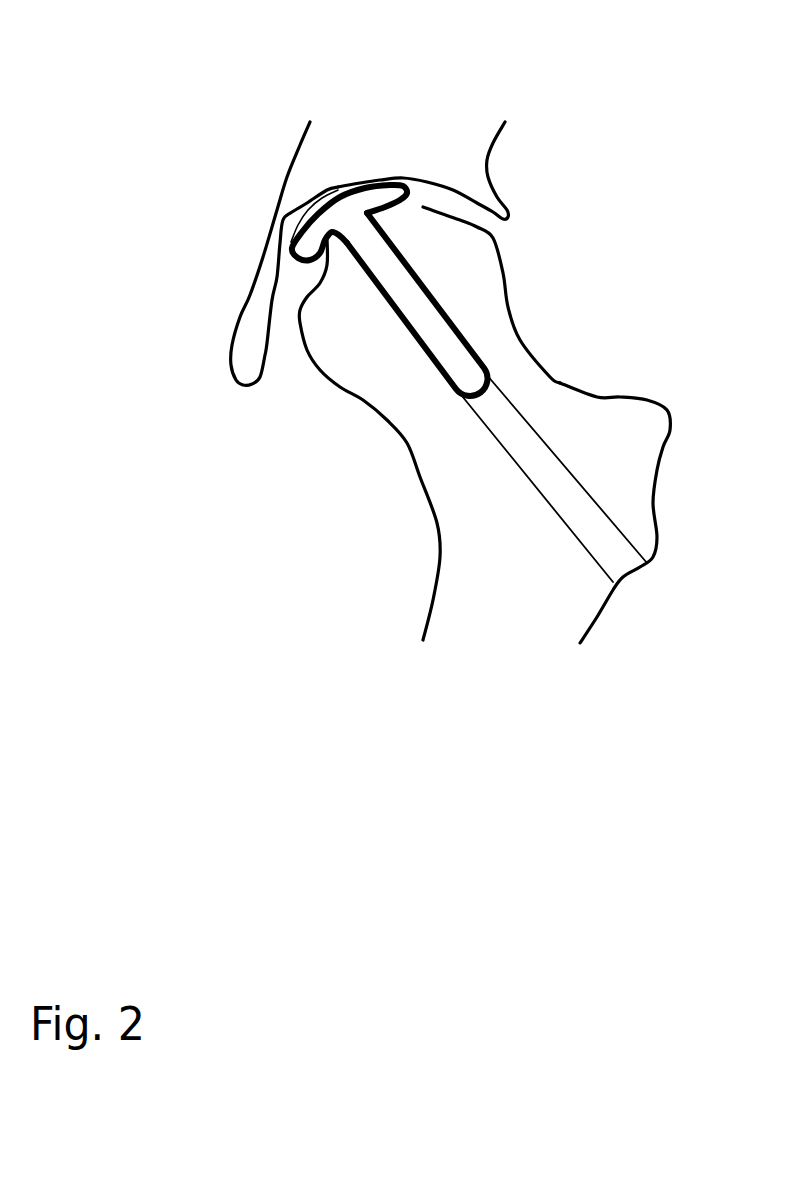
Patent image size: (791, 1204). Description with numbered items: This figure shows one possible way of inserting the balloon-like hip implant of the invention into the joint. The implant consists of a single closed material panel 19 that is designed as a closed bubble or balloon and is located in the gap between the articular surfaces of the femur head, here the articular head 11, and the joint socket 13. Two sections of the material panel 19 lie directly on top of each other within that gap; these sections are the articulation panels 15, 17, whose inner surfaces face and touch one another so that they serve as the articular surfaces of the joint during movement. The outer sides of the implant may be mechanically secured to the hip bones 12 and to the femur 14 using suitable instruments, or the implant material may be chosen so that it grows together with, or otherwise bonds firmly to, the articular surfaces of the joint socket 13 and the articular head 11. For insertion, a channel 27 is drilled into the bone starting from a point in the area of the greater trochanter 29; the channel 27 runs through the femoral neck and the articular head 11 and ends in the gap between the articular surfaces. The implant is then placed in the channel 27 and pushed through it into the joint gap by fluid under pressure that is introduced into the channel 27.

The articular head 11 is at (453, 265).
The hip bones 12 is at (290, 167).
The joint socket 13 is at (400, 178).
The femur 14 is at (430, 608).
The articulation panel 15 is at (337, 187).
The articulation panel 17 is at (414, 340).
The material panel 19 is at (453, 322).
The channel 27 is at (600, 547).
The greater trochanter 29 is at (617, 480).